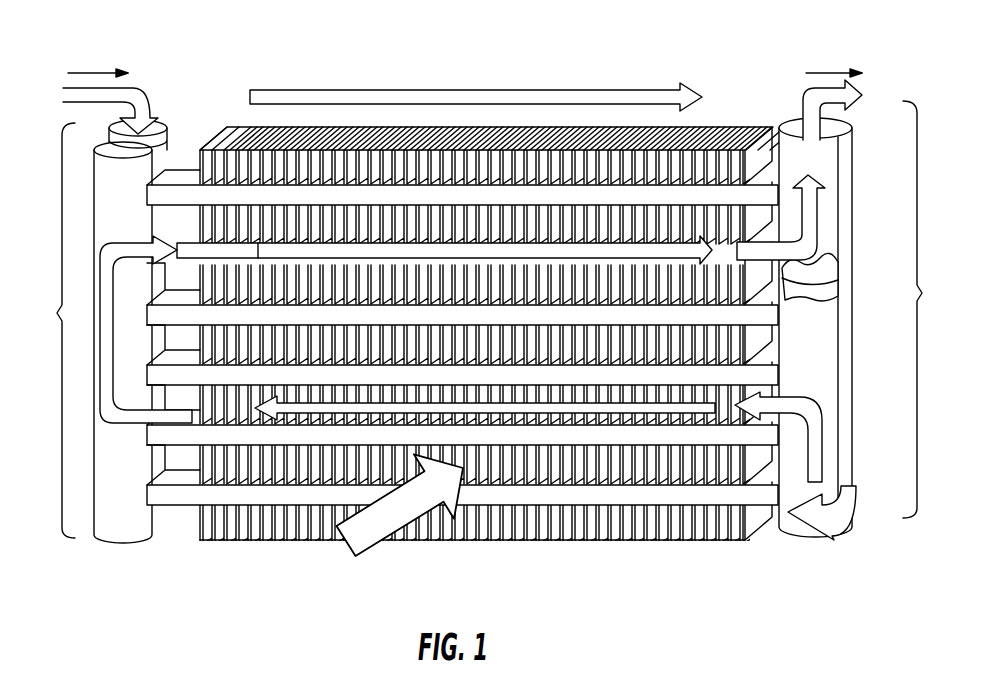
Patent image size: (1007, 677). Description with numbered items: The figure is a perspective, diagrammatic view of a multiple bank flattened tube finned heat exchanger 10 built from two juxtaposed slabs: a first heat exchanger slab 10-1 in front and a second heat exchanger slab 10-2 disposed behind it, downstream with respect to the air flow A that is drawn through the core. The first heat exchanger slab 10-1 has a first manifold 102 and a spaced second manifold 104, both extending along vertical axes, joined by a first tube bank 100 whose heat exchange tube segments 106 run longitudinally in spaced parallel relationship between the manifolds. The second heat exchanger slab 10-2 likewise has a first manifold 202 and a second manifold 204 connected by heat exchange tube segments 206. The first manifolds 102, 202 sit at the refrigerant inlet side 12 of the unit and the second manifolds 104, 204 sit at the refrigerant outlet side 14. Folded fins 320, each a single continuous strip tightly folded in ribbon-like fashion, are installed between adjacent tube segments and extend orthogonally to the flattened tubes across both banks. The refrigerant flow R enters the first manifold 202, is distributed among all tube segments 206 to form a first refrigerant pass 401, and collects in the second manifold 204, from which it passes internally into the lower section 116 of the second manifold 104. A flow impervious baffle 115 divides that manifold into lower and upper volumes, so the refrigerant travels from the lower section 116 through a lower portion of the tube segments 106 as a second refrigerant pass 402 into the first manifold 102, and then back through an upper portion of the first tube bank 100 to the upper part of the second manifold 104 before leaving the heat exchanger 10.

The multiple bank flattened tube finned heat exchanger 10 is at (325, 83).
The first heat exchanger slab 10-1 is at (315, 527).
The second heat exchanger slab 10-2 is at (615, 84).
The refrigerant inlet side 12 is at (52, 330).
The refrigerant outlet side 14 is at (926, 309).
The first tube bank 100 is at (637, 533).
The first manifold 102 is at (134, 537).
The second manifold 104 is at (800, 530).
The heat exchange tube segments 106 is at (712, 435).
The flow impervious baffle 115 is at (838, 278).
The lower section 116 is at (828, 383).
The first manifold 202 is at (168, 135).
The second manifold 204 is at (858, 150).
The heat exchange tube segments 206 is at (773, 352).
The folded fins 320 is at (200, 540).
The first refrigerant pass 401 is at (500, 89).
The second refrigerant pass 402 is at (504, 403).
The air flow A is at (370, 549).
The refrigerant flow R is at (147, 93).